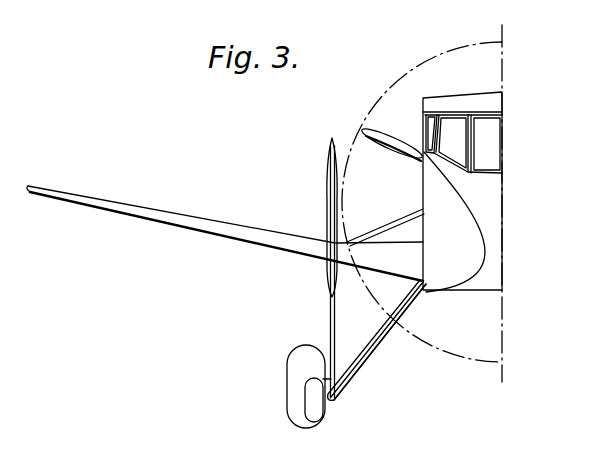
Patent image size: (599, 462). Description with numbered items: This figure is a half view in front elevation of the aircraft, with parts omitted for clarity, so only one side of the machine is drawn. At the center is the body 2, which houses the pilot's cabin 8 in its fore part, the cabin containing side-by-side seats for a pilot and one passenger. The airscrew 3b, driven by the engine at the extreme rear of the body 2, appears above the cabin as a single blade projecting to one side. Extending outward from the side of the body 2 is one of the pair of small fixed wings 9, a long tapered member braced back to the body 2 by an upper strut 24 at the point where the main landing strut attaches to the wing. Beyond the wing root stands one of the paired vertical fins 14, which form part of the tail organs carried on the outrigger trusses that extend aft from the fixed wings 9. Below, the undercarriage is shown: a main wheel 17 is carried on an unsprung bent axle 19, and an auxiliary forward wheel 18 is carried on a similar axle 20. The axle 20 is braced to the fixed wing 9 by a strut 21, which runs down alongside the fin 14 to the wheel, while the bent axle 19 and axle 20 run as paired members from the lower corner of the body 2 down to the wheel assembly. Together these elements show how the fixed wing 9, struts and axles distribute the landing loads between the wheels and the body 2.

The body 2 is at (462, 192).
The airscrew 3b is at (399, 160).
The pilot's cabin 8 is at (463, 144).
The fixed wing 9 is at (190, 228).
The vertical fin 14 is at (326, 200).
The main wheel 17 is at (289, 374).
The auxiliary forward wheel 18 is at (319, 410).
The bent axle 19 is at (371, 340).
The axle 20 is at (368, 362).
The strut 21 is at (328, 315).
The upper strut 24 is at (398, 219).